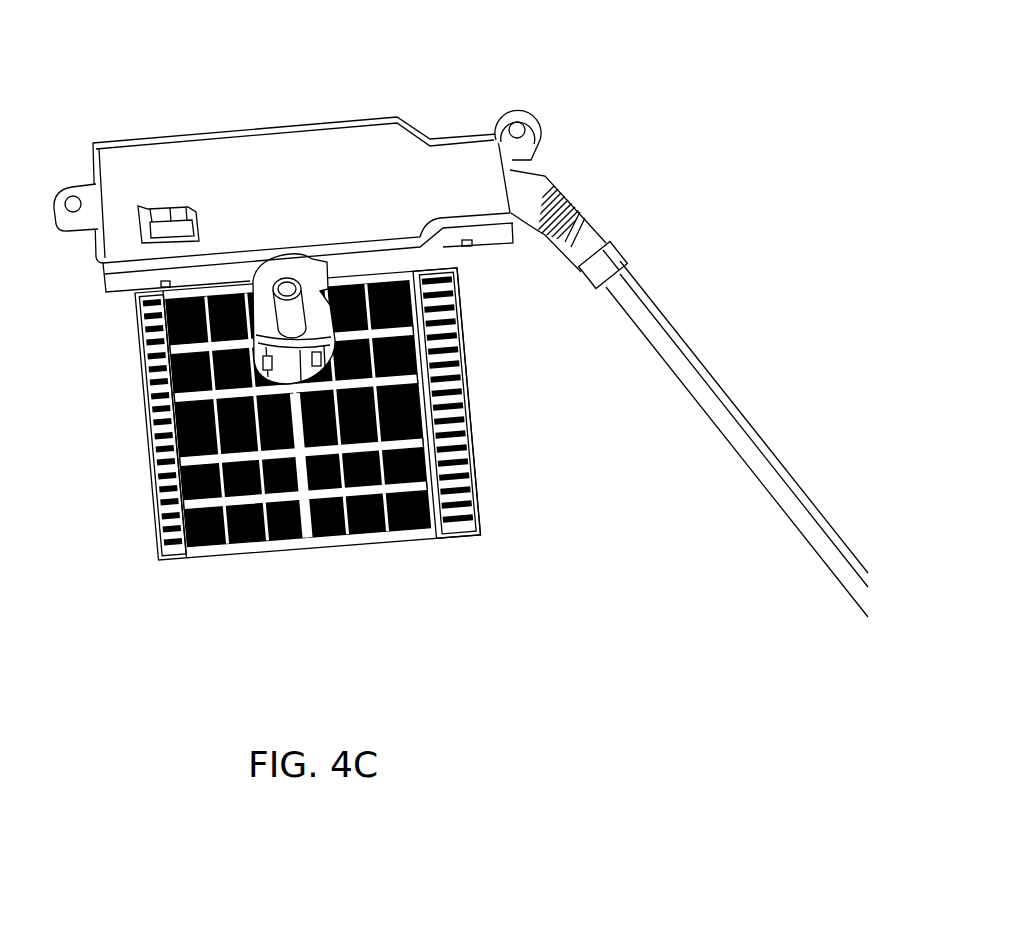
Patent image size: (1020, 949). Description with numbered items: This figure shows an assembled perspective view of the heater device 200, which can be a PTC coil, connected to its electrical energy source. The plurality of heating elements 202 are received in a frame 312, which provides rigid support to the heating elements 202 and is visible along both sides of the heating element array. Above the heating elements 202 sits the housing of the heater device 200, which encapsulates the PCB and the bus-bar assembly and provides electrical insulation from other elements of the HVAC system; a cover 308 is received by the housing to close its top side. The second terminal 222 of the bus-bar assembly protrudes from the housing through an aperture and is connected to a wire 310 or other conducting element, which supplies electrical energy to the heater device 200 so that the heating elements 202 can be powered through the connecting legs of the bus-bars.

The heater device 200 is at (516, 558).
The heating elements 202 is at (263, 527).
The second terminal 222 is at (550, 200).
The cover 308 is at (290, 174).
The wire 310 is at (645, 298).
The frame 312 is at (152, 487).